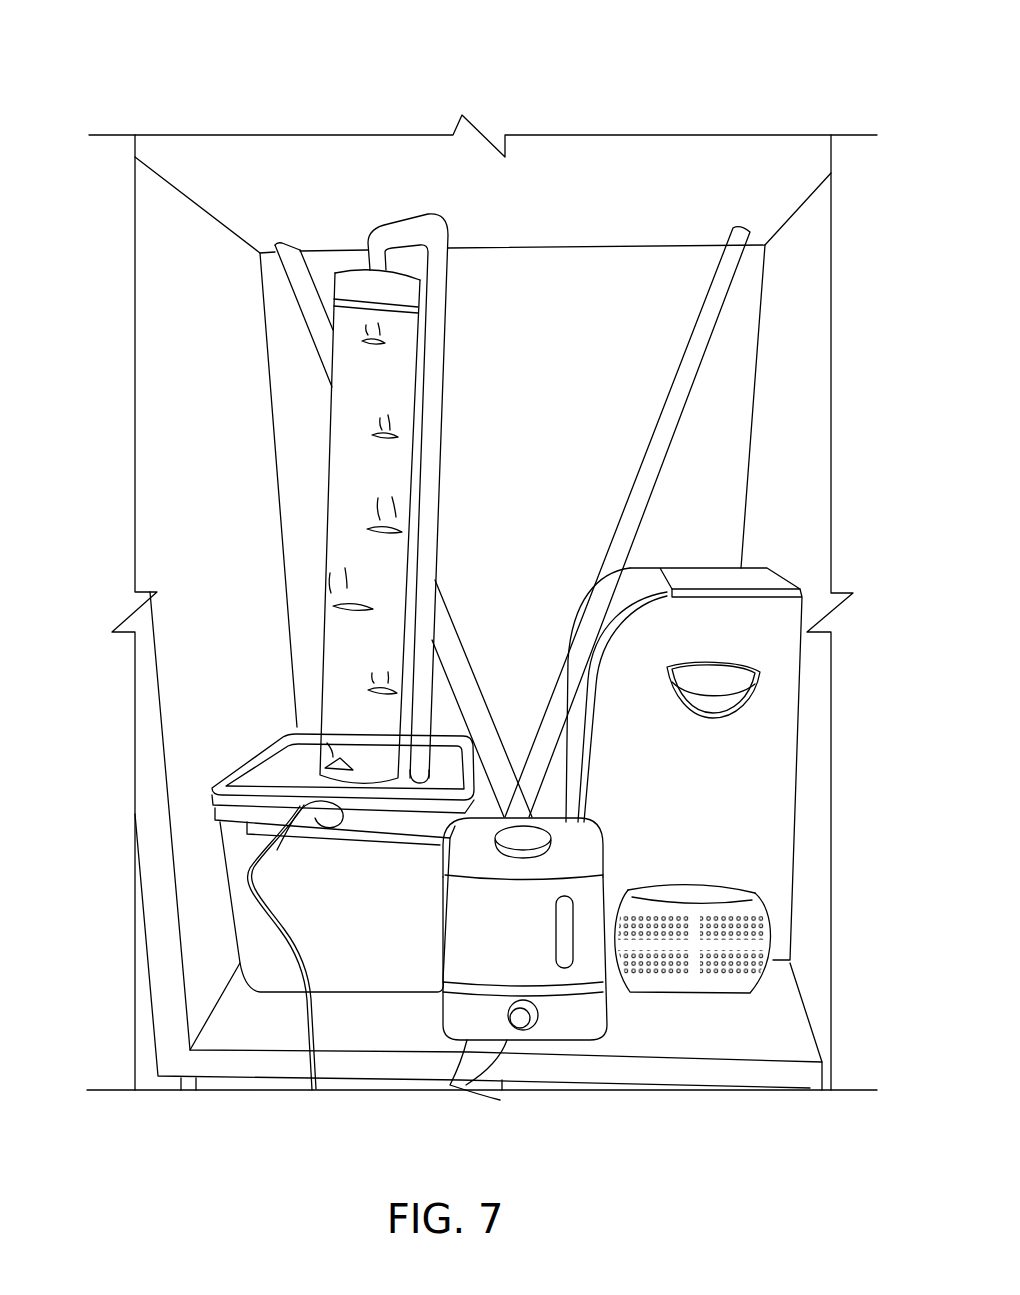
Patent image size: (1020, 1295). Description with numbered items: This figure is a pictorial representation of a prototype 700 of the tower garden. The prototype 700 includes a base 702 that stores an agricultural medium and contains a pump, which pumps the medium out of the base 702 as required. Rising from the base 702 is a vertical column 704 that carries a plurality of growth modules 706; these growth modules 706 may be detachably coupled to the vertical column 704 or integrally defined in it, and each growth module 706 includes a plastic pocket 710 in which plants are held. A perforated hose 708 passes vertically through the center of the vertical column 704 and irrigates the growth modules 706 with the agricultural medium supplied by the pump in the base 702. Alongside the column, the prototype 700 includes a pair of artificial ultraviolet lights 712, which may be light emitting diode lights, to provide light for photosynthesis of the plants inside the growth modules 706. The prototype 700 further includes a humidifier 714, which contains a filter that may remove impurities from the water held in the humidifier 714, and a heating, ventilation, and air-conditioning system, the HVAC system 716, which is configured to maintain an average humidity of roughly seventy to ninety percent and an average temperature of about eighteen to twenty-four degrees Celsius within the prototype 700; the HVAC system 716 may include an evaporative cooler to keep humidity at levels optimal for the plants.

The prototype 700 is at (141, 63).
The base 702 is at (240, 851).
The vertical column 704 is at (340, 655).
The growth module 706 is at (302, 262).
The perforated hose 708 is at (357, 340).
The plastic pocket 710 is at (385, 435).
The artificial ultraviolet (UV) lights 712 is at (452, 630).
The humidifier 714 is at (563, 1030).
The HVAC system 716 is at (765, 785).